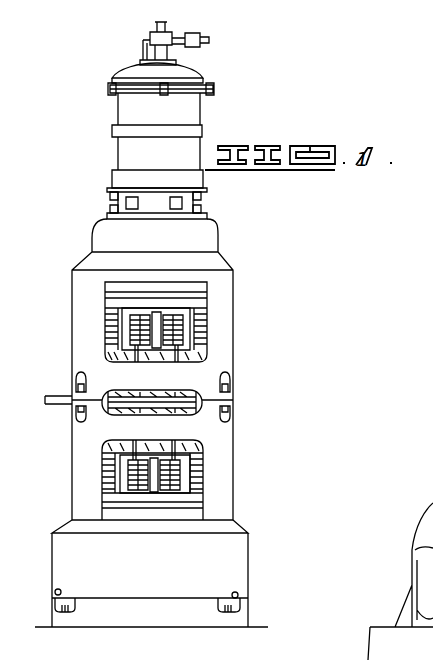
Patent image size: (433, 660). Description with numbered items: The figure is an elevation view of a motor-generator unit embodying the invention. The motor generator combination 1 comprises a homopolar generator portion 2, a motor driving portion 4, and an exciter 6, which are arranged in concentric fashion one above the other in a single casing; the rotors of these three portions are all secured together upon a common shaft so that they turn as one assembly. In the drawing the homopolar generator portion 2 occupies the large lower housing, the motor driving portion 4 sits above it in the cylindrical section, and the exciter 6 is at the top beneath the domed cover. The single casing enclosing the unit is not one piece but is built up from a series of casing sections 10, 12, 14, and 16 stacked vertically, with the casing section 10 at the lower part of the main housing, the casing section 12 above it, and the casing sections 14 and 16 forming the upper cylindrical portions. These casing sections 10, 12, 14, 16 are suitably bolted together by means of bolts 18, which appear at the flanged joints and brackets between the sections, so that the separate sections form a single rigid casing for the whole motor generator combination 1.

The motor generator combination 1 is at (173, 324).
The homopolar generator portion 2 is at (245, 377).
The motor driving portion 4 is at (159, 140).
The exciter 6 is at (110, 106).
The casing section 10 is at (233, 474).
The casing section 12 is at (234, 322).
The casing section 14 is at (200, 147).
The casing section 16 is at (188, 107).
The bolts 18 is at (205, 203).